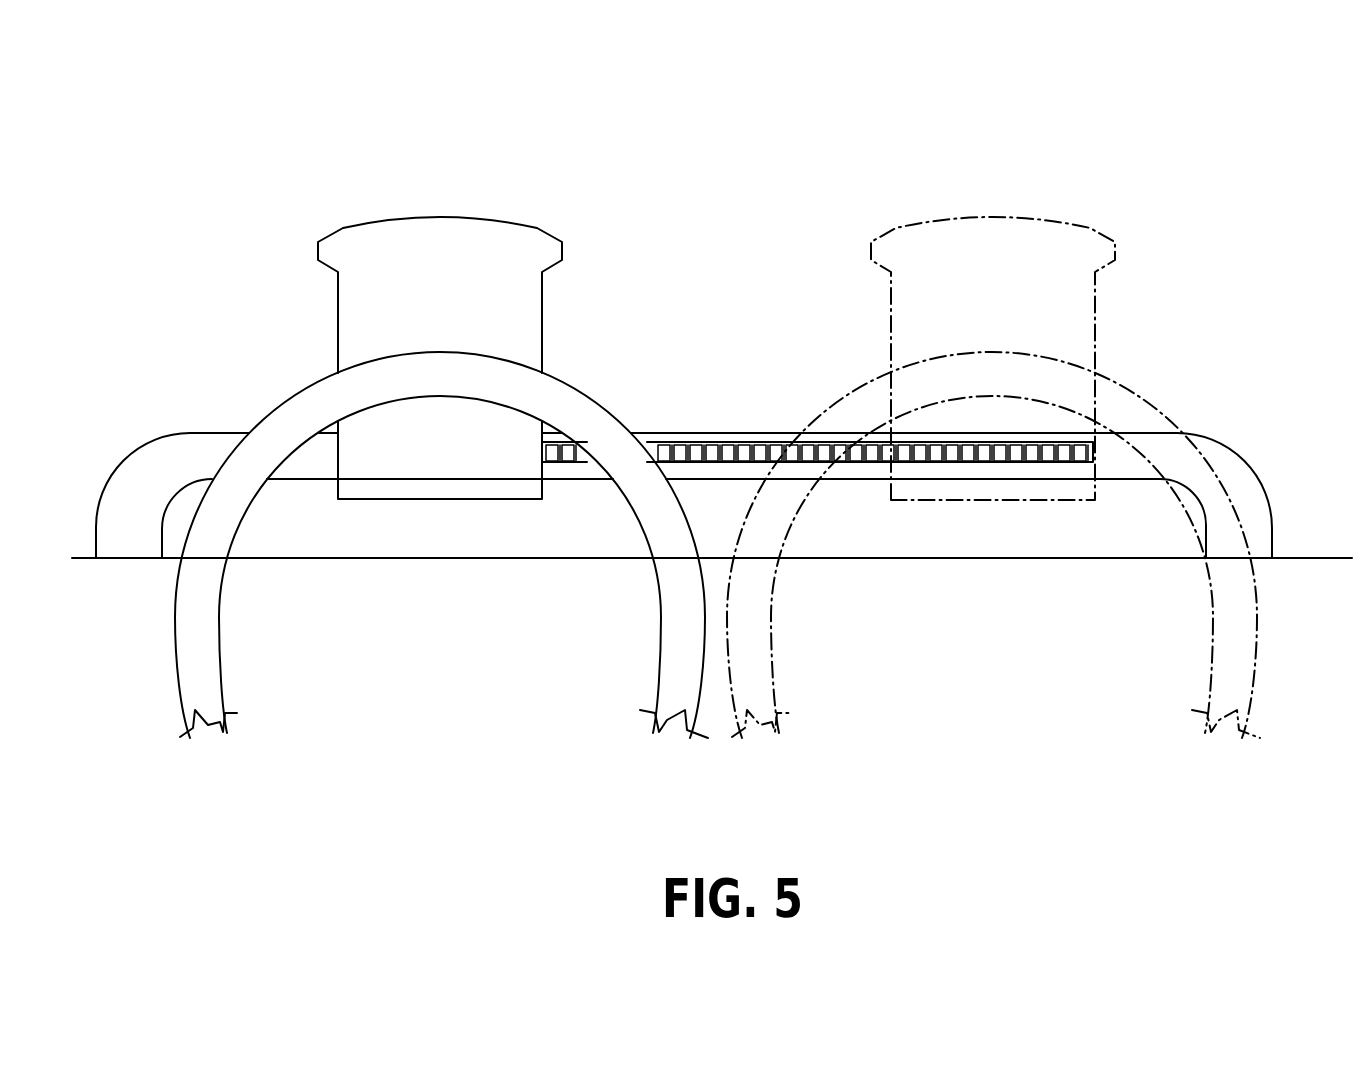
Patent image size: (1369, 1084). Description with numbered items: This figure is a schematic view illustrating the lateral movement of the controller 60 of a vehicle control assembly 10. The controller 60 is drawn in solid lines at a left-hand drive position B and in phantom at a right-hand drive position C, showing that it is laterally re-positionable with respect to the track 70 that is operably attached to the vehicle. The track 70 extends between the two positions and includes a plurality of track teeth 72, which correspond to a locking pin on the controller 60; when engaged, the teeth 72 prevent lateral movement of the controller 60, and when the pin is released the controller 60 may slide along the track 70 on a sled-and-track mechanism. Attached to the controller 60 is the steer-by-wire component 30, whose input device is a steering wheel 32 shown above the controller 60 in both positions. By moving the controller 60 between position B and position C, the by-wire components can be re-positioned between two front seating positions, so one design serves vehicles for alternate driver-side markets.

The vehicle control assembly 10 is at (259, 223).
The steer-by-wire component 30 is at (467, 402).
The steering wheel 32 is at (298, 425).
The controller 60 is at (432, 217).
The track 70 is at (717, 422).
The track teeth 72 is at (777, 470).
The left-hand drive position B is at (523, 220).
The right-hand drive position C is at (1077, 220).